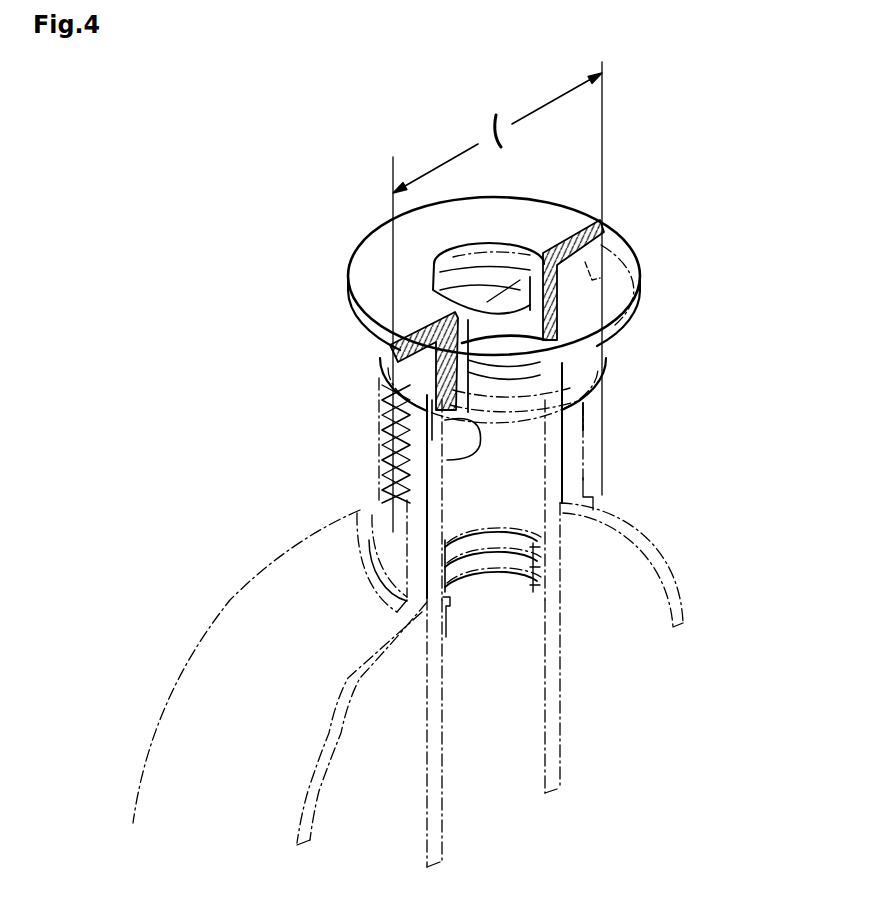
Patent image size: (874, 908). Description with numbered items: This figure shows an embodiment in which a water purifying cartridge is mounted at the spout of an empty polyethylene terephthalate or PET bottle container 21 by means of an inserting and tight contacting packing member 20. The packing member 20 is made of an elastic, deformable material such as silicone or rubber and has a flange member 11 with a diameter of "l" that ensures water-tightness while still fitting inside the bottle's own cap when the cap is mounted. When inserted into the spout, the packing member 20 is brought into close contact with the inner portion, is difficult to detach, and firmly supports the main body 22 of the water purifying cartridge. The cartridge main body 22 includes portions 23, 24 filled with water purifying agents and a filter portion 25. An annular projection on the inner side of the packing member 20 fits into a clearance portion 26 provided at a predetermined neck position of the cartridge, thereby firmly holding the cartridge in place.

The flange member 11 is at (617, 262).
The packing member 20 is at (543, 200).
The empty polyethylene terephthalate or PET bottle container 21 is at (582, 405).
The main body of the water purifying cartridge 22 is at (550, 503).
The portion of filling the water purifying agents 23 is at (520, 461).
The portion of filling the water purifying agents 24 is at (510, 757).
The filter portion 25 is at (470, 459).
The clearance portion 26 is at (435, 263).